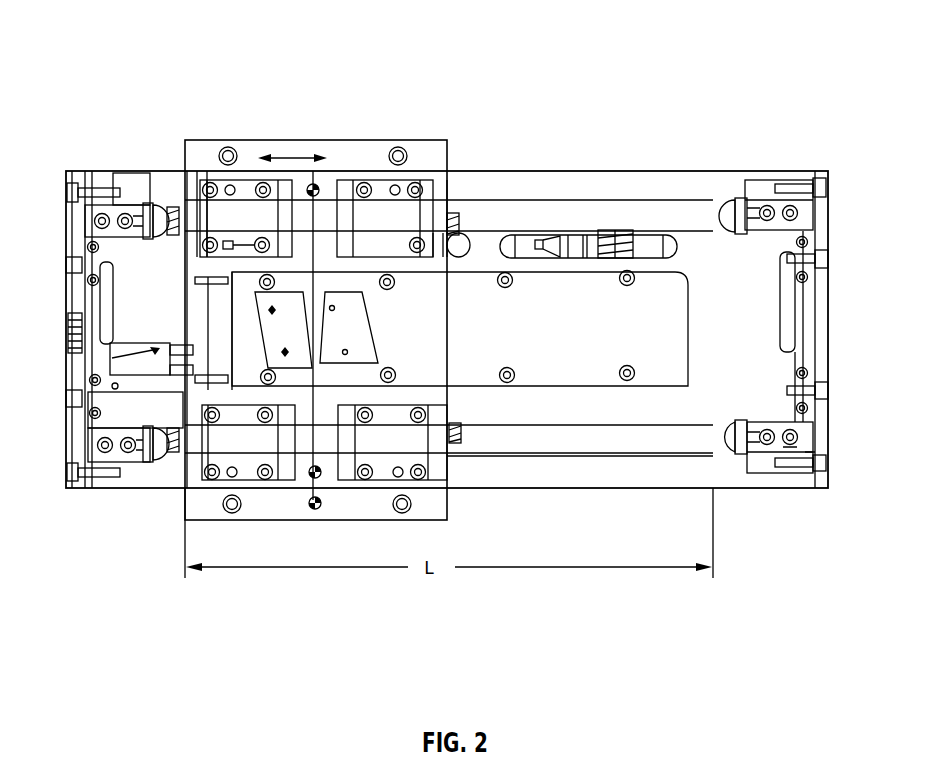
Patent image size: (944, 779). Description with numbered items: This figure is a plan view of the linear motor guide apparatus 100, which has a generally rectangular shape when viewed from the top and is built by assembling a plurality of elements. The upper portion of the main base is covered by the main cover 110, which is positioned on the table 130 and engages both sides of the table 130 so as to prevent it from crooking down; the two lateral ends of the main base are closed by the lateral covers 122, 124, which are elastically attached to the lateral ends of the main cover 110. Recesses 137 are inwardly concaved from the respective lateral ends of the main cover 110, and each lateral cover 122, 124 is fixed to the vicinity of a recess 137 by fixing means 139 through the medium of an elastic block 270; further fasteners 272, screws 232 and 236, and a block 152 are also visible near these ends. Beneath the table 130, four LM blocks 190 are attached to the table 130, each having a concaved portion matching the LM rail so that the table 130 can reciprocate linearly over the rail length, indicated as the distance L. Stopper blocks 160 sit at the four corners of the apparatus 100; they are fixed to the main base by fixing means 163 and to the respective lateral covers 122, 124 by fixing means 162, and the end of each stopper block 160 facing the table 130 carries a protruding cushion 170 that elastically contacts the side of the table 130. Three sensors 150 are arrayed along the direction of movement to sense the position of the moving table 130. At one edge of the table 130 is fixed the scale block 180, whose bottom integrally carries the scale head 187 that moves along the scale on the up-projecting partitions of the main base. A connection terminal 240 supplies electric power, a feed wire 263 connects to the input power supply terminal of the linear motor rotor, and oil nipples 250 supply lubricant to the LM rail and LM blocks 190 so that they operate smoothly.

The linear motor guide apparatus 100 is at (583, 76).
The main cover 110 is at (510, 182).
The lateral cover 122 is at (82, 172).
The lateral cover 124 is at (822, 171).
The table 130 is at (385, 140).
The recess 137 is at (787, 315).
The fixing means 139 is at (806, 240).
The sensor 150 is at (243, 183).
The guide block 152 is at (617, 230).
The stopper block 160 is at (143, 183).
The fixing means 162 is at (103, 187).
The fixing means 163 is at (810, 452).
The protruding cushion 170 is at (175, 205).
The scale block 180 is at (110, 363).
The scale head 187 is at (110, 375).
The LM block 190 is at (243, 197).
The adjusting screws 232 is at (66, 263).
The fixing screws 236 is at (88, 246).
The connection terminal 240 is at (68, 333).
The oil nipple 250 is at (177, 207).
The feed wire 263 is at (228, 183).
The elastic block 270 is at (85, 297).
The side plate screws 272 is at (815, 253).